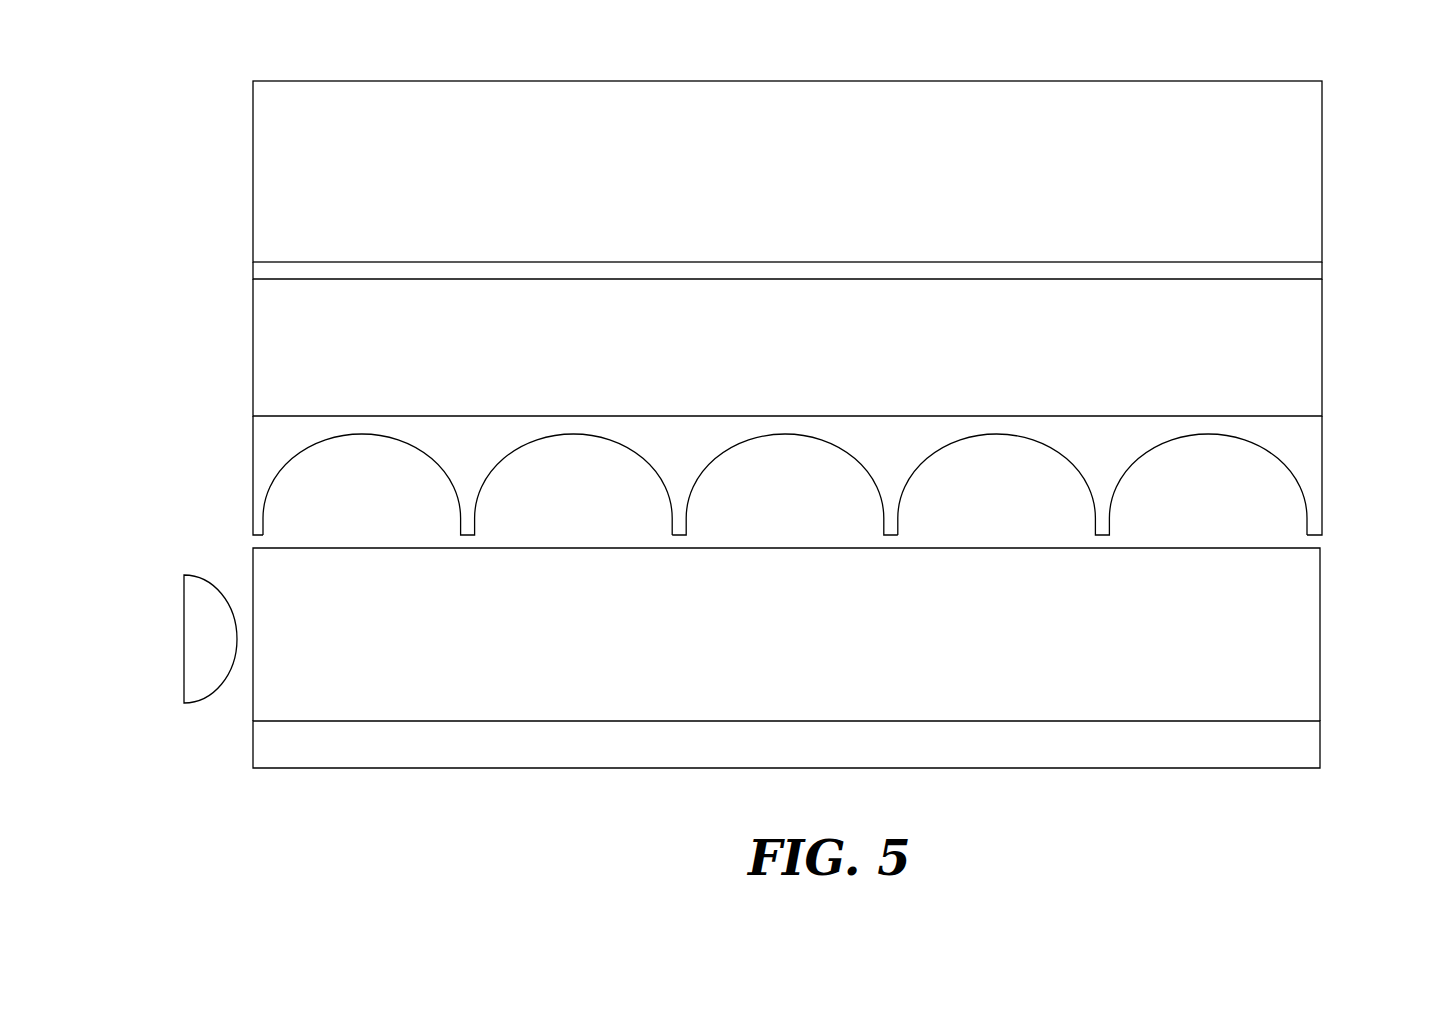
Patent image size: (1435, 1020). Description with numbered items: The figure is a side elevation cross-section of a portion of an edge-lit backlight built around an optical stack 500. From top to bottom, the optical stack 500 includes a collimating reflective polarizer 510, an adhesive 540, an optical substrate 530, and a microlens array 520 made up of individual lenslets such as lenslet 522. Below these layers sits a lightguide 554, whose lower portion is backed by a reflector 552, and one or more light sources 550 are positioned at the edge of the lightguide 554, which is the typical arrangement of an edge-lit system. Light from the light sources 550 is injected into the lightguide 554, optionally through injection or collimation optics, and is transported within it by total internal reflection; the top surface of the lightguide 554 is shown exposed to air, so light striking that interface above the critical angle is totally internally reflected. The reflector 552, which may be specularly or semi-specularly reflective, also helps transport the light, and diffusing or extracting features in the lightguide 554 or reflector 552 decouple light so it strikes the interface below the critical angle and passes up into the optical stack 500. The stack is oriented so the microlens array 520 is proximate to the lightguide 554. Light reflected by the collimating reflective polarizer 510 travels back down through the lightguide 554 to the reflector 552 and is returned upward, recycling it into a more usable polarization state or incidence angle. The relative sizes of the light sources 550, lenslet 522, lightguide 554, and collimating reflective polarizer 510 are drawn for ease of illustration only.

The optical stack 500 is at (182, 140).
The collimating reflective polarizer 510 is at (1322, 183).
The adhesive 540 is at (1322, 270).
The optical substrate 530 is at (1322, 343).
The microlens array 520 is at (844, 475).
The lenslet 522 is at (808, 440).
The light source 550 is at (184, 640).
The lightguide 554 is at (1320, 636).
The reflector 552 is at (1320, 754).